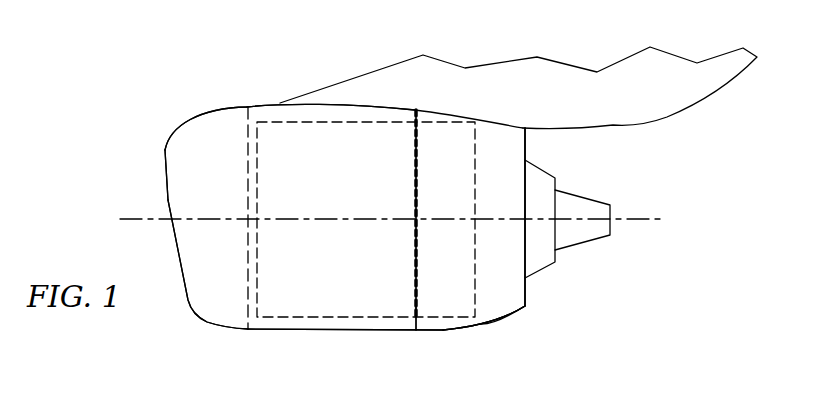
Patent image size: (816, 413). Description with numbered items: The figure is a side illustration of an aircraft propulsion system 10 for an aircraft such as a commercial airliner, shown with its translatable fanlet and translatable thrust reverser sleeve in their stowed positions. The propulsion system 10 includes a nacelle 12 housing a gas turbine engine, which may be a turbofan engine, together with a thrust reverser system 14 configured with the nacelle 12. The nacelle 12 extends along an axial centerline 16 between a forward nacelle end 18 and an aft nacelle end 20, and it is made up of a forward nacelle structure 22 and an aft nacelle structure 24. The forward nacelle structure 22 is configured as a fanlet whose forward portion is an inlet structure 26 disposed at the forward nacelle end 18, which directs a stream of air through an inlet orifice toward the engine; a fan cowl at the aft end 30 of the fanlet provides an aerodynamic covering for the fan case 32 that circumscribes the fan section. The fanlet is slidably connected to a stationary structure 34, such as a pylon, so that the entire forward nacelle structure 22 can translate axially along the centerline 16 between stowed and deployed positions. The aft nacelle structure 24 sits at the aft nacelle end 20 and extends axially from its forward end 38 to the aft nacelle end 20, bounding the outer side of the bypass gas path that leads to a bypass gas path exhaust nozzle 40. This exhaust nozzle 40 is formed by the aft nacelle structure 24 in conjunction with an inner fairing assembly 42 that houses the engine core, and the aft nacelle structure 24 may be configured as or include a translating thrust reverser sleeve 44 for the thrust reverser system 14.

The aircraft propulsion system 10 is at (166, 68).
The nacelle 12 is at (266, 96).
The thrust reverser system 14 is at (450, 335).
The axial centerline 16 is at (650, 222).
The forward nacelle end 18 is at (165, 147).
The aft nacelle end 20 is at (527, 143).
The forward nacelle structure 22 is at (258, 342).
The aft nacelle structure 24 is at (491, 336).
The inlet structure 26 is at (202, 323).
The aft end of the fanlet 30 is at (422, 317).
The fan case 32 is at (288, 317).
The stationary structure 34 is at (370, 68).
The forward end of the aft nacelle structure 38 is at (410, 317).
The bypass gas path exhaust nozzle 40 is at (537, 290).
The inner fairing assembly 42 is at (547, 268).
The thrust reverser sleeve 44 is at (503, 315).